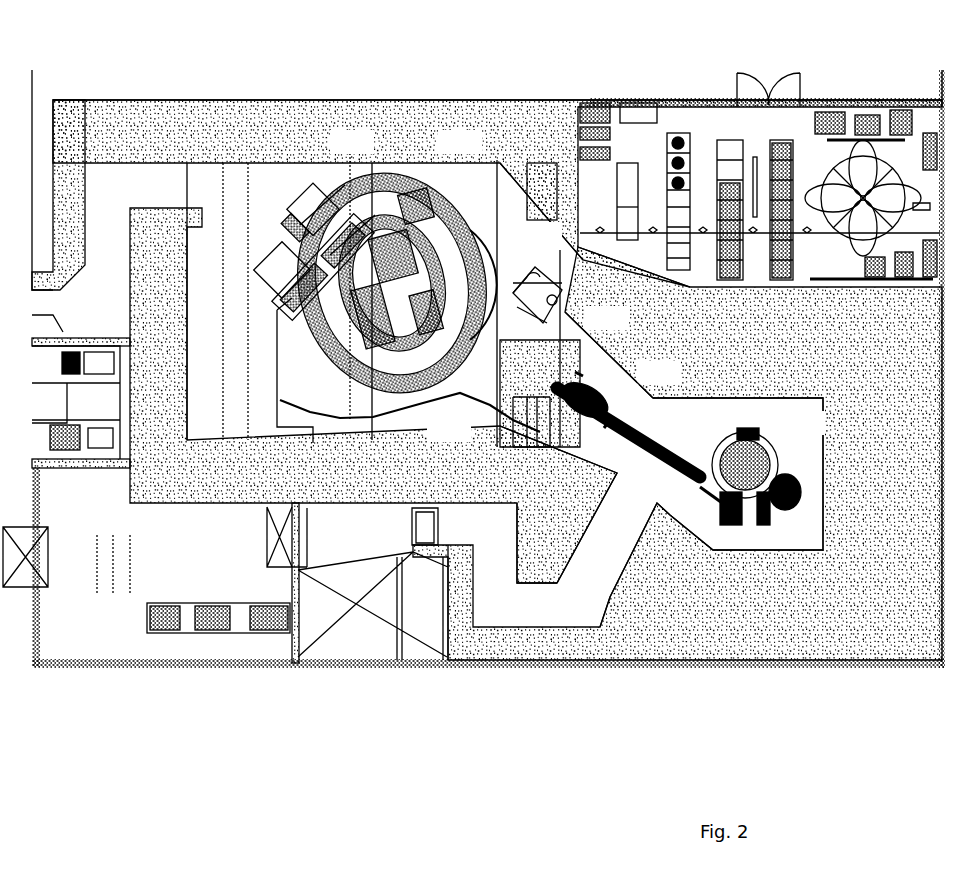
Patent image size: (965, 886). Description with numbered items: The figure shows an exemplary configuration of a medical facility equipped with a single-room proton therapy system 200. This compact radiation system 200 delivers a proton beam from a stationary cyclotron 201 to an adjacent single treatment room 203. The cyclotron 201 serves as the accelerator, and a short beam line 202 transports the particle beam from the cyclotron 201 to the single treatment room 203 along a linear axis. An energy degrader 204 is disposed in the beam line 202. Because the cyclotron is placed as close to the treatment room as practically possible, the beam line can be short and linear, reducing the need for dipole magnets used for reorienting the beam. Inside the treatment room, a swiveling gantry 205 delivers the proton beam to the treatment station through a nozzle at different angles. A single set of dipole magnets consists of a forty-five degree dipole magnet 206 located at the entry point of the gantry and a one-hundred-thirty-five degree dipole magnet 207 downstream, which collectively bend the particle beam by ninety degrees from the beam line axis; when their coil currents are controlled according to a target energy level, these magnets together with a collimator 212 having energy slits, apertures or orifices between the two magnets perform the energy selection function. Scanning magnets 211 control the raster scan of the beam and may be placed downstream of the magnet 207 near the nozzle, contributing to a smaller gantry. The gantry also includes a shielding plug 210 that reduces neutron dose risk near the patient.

The single-room proton therapy system 200 is at (921, 24).
The cyclotron 201 is at (773, 463).
The beam line 202 is at (667, 447).
The single treatment room 203 is at (283, 205).
The energy degrader 204 is at (627, 420).
The swiveling gantry 205 is at (485, 273).
The 45° dipole magnet 206 is at (497, 360).
The 135° dipole magnet 207 is at (435, 187).
The shielding plug 210 is at (470, 383).
The scanning magnets 211 is at (413, 288).
The collimator 212 is at (463, 228).